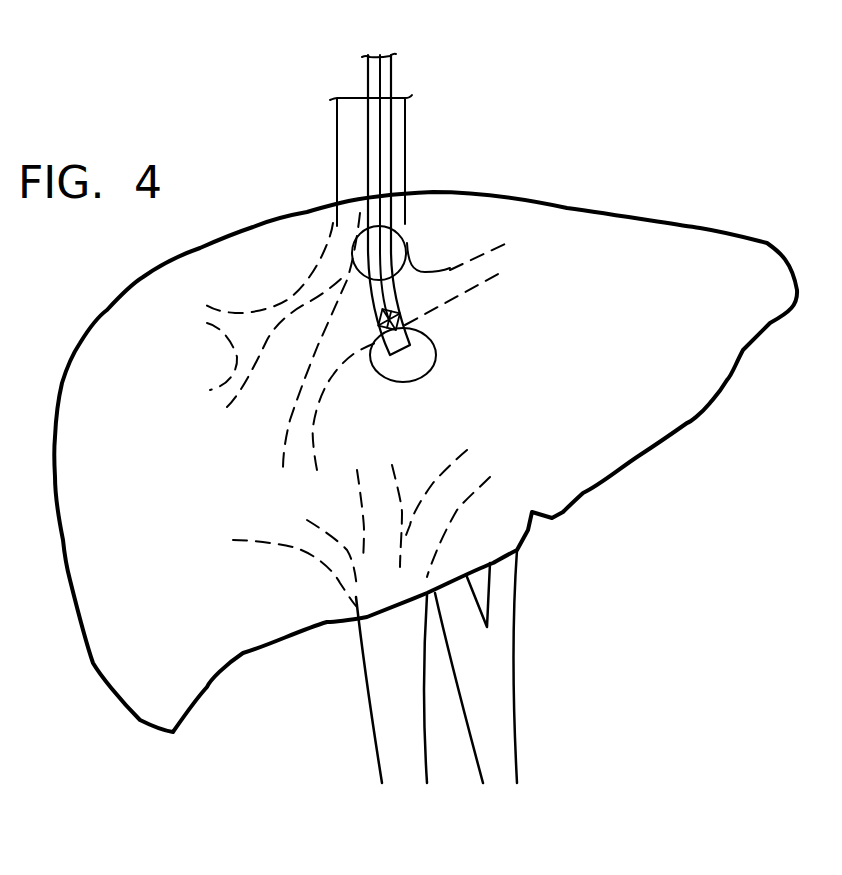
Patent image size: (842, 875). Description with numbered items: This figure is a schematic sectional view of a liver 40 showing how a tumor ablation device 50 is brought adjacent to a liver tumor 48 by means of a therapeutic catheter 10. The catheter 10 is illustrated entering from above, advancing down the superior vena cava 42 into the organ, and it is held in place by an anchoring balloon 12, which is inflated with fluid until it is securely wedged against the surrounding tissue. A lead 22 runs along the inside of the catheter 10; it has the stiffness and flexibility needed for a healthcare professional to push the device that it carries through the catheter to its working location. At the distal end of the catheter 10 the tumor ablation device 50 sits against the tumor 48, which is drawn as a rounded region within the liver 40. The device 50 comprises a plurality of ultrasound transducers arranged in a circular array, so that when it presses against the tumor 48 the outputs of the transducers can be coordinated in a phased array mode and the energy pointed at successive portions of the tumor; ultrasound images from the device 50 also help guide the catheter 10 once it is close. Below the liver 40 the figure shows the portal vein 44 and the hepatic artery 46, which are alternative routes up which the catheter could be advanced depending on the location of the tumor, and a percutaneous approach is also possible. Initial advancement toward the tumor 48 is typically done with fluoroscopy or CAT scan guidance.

The therapeutic catheter 10 is at (410, 203).
The anchoring balloon 12 is at (407, 236).
The lead 22 is at (382, 123).
The liver 40 is at (630, 218).
The superior vena cava 42 is at (337, 107).
The portal vein 44 is at (370, 682).
The hepatic artery 46 is at (510, 680).
The liver tumor 48 is at (435, 360).
The tumor ablation device 50 is at (400, 312).